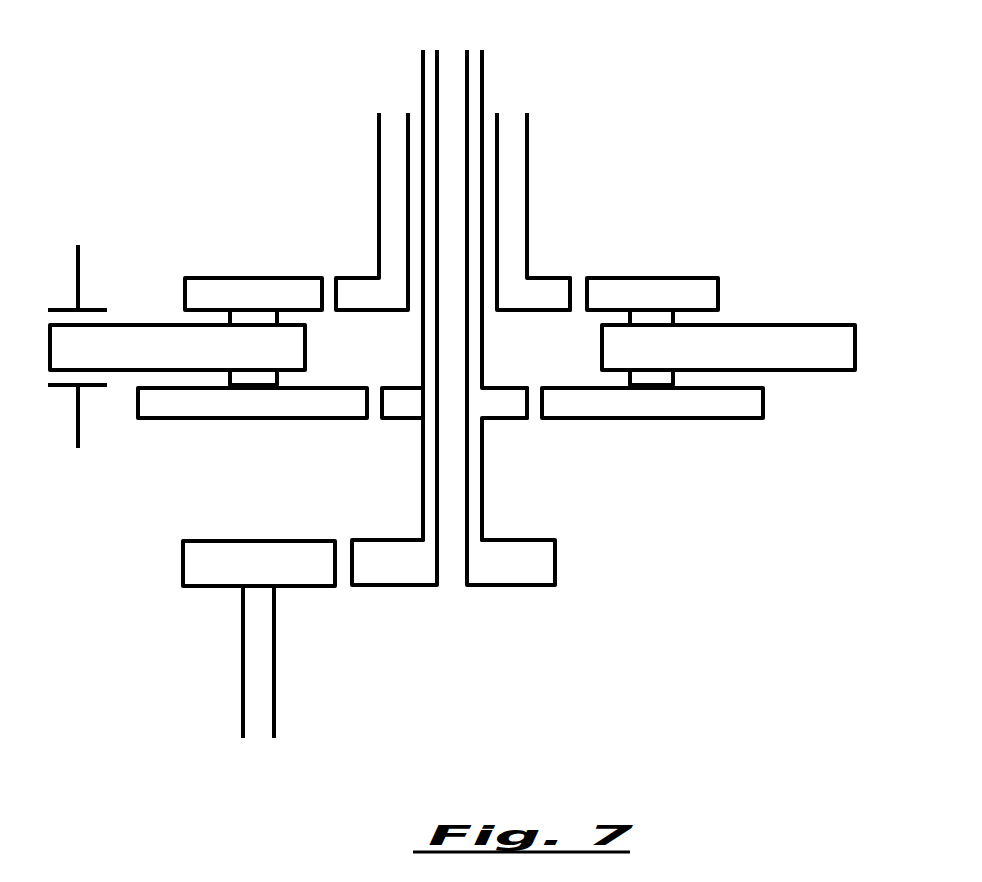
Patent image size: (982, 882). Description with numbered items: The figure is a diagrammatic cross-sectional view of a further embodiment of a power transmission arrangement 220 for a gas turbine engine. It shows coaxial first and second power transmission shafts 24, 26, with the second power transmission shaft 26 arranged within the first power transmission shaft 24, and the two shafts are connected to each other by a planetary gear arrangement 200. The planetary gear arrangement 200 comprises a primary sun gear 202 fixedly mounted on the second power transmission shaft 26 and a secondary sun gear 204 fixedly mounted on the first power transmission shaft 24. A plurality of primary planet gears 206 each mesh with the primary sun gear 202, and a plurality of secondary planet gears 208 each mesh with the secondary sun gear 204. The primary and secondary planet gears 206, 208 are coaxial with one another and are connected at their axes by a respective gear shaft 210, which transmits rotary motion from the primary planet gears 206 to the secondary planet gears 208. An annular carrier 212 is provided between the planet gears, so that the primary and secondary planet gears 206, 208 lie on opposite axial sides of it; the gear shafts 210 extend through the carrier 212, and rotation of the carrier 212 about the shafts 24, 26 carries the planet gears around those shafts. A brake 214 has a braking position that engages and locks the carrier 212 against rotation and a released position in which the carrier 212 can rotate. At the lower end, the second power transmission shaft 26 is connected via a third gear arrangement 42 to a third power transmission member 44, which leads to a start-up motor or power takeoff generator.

The first power transmission shaft 24 is at (519, 175).
The second power transmission shaft 26 is at (483, 84).
The third gear arrangement 42 is at (342, 586).
The third power transmission member 44 is at (255, 702).
The planetary gear arrangement 200 is at (603, 432).
The primary sun gear 202 is at (507, 408).
The secondary sun gear 204 is at (546, 290).
The primary planet gears 206 is at (192, 408).
The secondary planet gears 208 is at (213, 296).
The gear shaft 210 is at (263, 317).
The annular carrier 212 is at (142, 346).
The brake 214 is at (73, 288).
The power transmission arrangement 220 is at (385, 453).